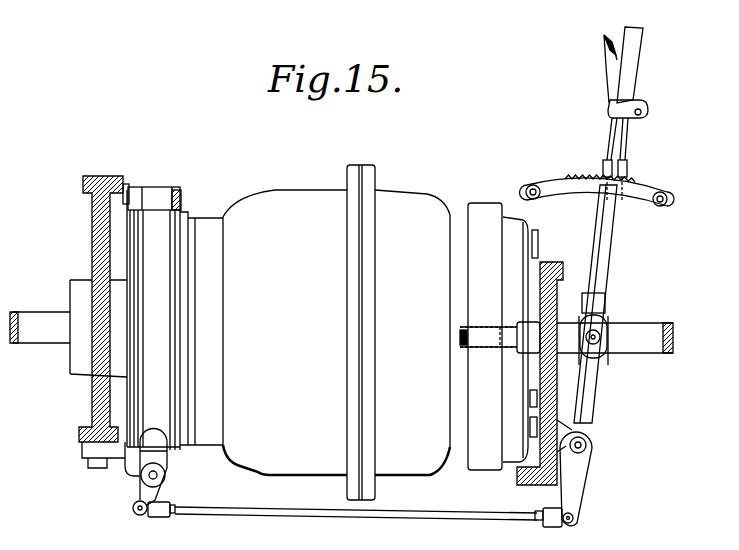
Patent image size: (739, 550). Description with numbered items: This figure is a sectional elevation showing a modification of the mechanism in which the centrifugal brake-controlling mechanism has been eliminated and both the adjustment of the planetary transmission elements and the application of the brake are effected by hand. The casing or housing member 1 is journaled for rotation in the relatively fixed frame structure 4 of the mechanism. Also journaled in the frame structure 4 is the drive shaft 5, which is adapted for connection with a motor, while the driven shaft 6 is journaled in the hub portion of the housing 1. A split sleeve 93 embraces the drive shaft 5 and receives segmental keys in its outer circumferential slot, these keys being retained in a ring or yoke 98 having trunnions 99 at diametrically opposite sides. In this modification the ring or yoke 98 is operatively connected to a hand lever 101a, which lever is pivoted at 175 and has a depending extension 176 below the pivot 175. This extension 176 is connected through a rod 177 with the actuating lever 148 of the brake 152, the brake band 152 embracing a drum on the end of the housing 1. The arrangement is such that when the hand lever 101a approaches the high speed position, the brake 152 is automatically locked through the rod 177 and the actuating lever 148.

The housing member 1 is at (330, 341).
The frame structure 4 is at (83, 178).
The drive shaft 5 is at (655, 345).
The driven shaft 6 is at (33, 318).
The split sleeve 93 is at (607, 365).
The ring or yoke 98 is at (603, 300).
The trunnions 99 is at (605, 332).
The hand lever 101a is at (607, 248).
The actuating lever 148 is at (138, 496).
The brake band 152 is at (158, 210).
The pivot 175 is at (590, 445).
The depending extension 176 is at (578, 490).
The rod 177 is at (375, 513).